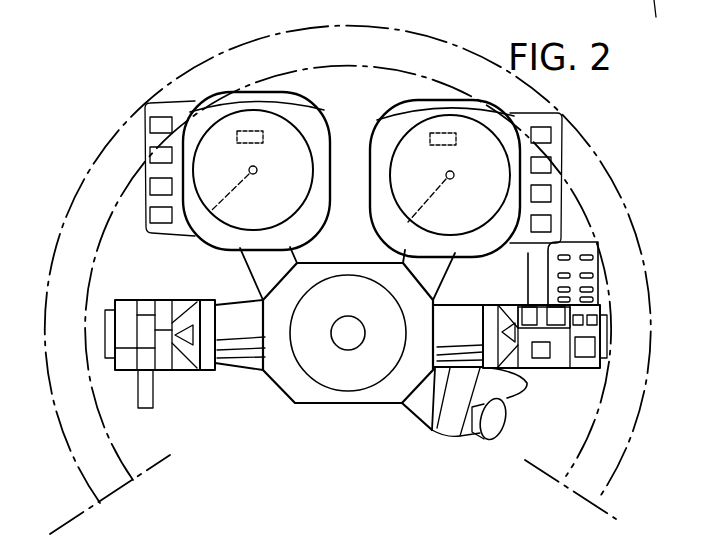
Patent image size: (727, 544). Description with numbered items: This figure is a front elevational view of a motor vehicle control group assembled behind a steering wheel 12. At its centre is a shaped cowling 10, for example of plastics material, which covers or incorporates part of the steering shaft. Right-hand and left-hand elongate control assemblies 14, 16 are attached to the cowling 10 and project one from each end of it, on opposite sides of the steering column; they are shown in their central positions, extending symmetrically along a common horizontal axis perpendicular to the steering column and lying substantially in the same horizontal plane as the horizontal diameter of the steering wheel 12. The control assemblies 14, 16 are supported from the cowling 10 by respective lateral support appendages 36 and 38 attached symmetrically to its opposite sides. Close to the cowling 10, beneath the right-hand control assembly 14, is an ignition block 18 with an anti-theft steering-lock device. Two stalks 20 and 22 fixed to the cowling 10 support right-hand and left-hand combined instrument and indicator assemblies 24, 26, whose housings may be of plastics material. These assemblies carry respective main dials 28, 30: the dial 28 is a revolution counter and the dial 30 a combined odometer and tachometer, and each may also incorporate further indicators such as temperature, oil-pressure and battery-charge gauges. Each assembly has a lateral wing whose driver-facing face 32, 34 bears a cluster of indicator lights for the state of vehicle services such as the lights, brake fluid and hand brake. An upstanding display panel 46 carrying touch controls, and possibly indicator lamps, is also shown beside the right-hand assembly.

The cowling 10 is at (352, 263).
The steering wheel 12 is at (596, 190).
The right-hand control assembly 14 is at (560, 360).
The left-hand control assembly 16 is at (178, 362).
The ignition block 18 is at (450, 409).
The stalk 20 is at (437, 270).
The stalk 22 is at (257, 263).
The right-hand combined instrument and indicator assembly 24 is at (395, 123).
The left-hand combined instrument and indicator assembly 26 is at (303, 113).
The main dial 28 is at (465, 133).
The main dial 30 is at (230, 127).
The face 32 is at (550, 148).
The face 34 is at (150, 138).
The lateral support appendage 36 is at (410, 414).
The lateral support appendage 38 is at (247, 349).
The display panel 46 is at (583, 250).